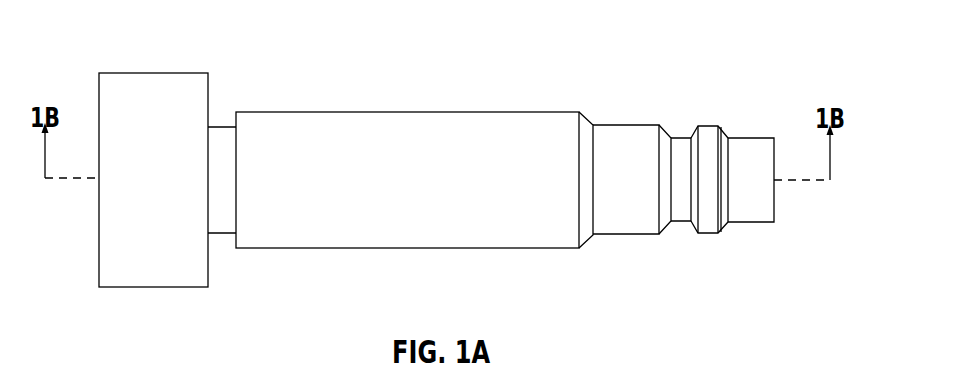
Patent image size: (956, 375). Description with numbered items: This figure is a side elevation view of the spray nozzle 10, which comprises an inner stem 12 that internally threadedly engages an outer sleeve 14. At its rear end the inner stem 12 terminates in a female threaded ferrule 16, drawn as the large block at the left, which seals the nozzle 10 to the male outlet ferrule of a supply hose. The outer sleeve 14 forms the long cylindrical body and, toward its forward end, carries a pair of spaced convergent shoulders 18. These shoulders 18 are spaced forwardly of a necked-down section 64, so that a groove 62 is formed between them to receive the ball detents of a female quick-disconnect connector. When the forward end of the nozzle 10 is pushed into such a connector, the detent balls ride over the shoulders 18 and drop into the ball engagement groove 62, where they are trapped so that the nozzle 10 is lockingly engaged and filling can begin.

The nozzle 10 is at (589, 42).
The inner stem 12 is at (220, 126).
The outer sleeve 14 is at (527, 249).
The female threaded ferrule 16 is at (148, 288).
The spaced convergent shoulders 18 is at (708, 125).
The ball engagement groove 62 is at (681, 223).
The necked-down section 64 is at (630, 119).